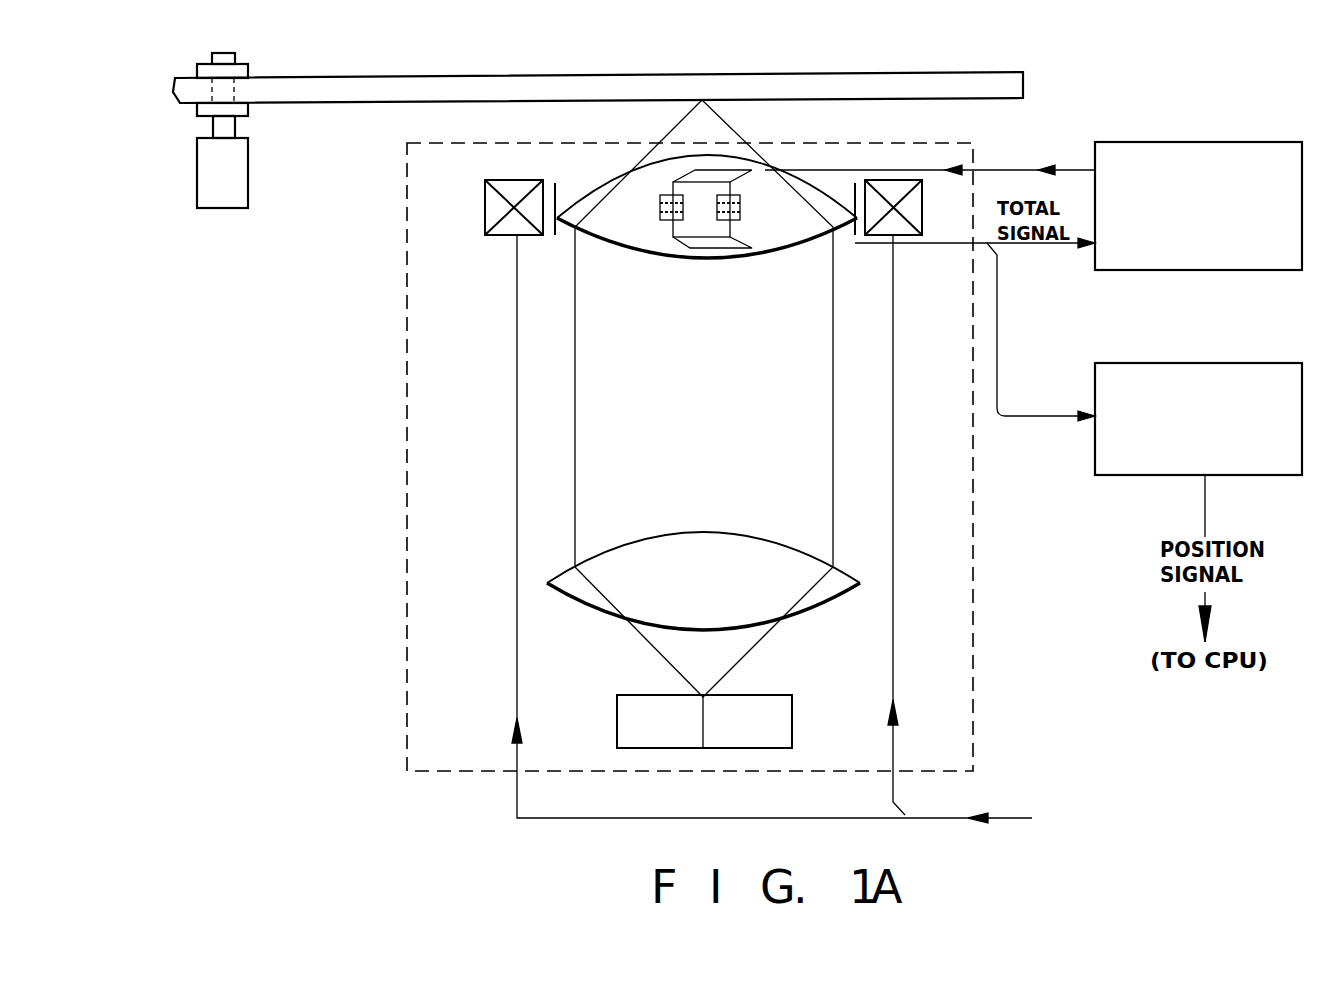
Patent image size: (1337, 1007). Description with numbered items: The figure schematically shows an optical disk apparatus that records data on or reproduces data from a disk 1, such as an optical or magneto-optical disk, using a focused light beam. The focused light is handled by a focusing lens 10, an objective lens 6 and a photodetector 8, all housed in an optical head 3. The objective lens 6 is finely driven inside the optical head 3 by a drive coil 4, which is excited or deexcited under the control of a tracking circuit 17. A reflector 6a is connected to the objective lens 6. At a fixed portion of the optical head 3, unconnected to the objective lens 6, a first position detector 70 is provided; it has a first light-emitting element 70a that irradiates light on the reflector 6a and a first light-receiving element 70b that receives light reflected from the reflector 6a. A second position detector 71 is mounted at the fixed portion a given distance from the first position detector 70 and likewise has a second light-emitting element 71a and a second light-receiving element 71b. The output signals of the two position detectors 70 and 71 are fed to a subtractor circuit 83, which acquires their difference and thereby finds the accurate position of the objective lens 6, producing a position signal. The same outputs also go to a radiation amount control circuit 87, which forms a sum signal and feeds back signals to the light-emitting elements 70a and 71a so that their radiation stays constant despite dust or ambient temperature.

The disk 1 is at (517, 75).
The optical head 3 is at (407, 426).
The drive coil 4 is at (485, 210).
The objective lens 6 is at (613, 232).
The reflector 6a is at (701, 234).
The first position detector 70 is at (666, 197).
The first light-emitting element 70a is at (660, 206).
The first light-receiving element 70b is at (658, 220).
The second position detector 71 is at (760, 251).
The second light-emitting element 71a is at (740, 206).
The second light-receiving element 71b is at (742, 216).
The focusing lens 10 is at (640, 546).
The photodetector 8 is at (792, 727).
The tracking circuit 17 is at (846, 543).
The radiation amount control circuit 87 is at (1245, 142).
The subtractor circuit 83 is at (1246, 363).